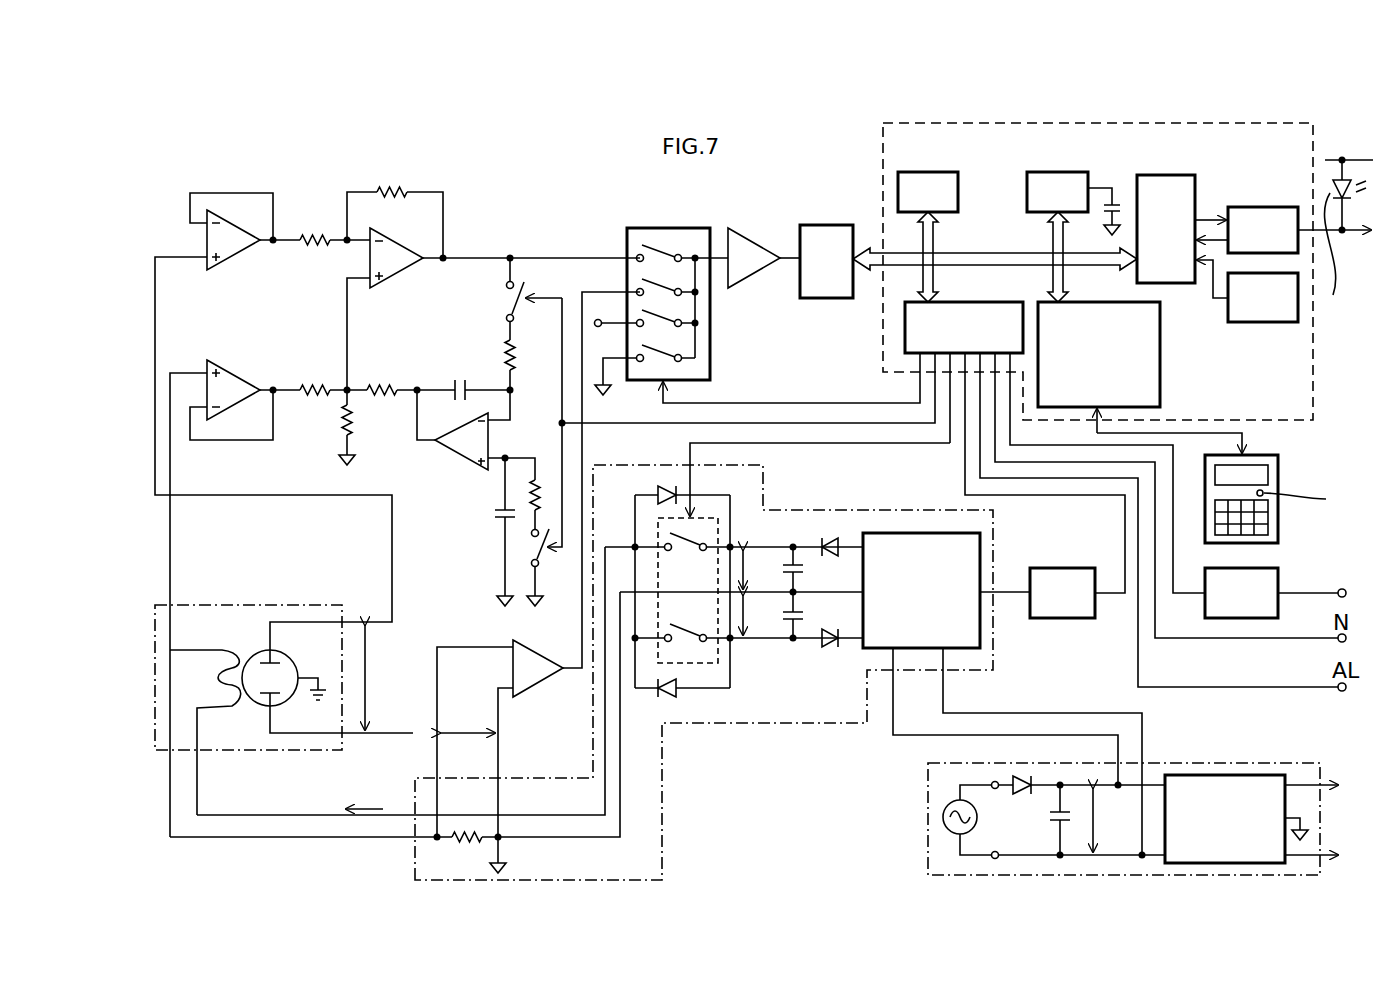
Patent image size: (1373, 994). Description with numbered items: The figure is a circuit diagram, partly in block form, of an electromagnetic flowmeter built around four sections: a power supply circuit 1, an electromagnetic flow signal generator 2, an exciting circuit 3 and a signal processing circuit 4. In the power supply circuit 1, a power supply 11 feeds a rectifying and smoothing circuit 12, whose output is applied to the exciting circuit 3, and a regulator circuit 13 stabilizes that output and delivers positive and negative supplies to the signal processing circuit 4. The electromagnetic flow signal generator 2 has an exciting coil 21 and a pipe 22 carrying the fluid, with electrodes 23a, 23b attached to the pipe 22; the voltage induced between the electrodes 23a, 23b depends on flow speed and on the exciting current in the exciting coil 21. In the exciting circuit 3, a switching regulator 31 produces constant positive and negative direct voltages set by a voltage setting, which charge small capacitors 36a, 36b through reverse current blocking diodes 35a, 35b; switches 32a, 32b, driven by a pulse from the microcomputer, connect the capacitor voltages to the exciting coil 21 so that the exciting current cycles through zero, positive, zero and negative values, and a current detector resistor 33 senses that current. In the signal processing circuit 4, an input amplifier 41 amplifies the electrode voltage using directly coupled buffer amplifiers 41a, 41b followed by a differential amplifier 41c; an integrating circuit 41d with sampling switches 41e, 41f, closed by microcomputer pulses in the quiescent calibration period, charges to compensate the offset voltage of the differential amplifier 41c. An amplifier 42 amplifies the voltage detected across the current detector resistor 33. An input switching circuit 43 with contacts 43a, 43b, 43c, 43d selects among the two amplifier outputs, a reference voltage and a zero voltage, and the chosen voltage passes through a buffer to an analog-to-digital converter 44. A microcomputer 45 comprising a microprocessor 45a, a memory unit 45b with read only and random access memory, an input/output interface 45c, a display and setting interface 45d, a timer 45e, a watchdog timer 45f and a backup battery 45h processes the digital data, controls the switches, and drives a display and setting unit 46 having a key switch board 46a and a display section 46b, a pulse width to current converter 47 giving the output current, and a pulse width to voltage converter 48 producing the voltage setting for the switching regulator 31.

The power supply circuit 1 is at (1192, 763).
The power supply 11 is at (945, 812).
The rectifying and smoothing circuit 12 is at (1050, 821).
The regulator circuit 13 is at (1253, 775).
The electromagnetic flow signal generator 2 is at (245, 607).
The exciting coil 21 is at (222, 660).
The pipe 22 is at (294, 666).
The electrode 23a is at (263, 653).
The electrode 23b is at (263, 705).
The exciting circuit 3 is at (415, 860).
The switching regulator 31 is at (912, 533).
The switch 32a is at (734, 591).
The switch 32b is at (748, 647).
The current detector resistor 33 is at (466, 843).
The reverse current blocking diode 35a is at (836, 535).
The reverse current blocking diode 35b is at (832, 652).
The capacitor 36a is at (787, 562).
The capacitor 36b is at (792, 626).
The signal processing circuit 4 is at (826, 194).
The input amplifier 41 is at (565, 168).
The directly coupled buffer amplifier 41a is at (232, 262).
The directly coupled buffer amplifier 41b is at (232, 368).
The differential amplifier 41c is at (392, 281).
The integrating circuit 41d is at (470, 458).
The sampling switch 41e is at (505, 302).
The sampling switch 41f is at (550, 568).
The amplifier 42 is at (520, 652).
The input switching circuit 43 is at (652, 228).
The switch contact of input switching circuit 43a is at (683, 266).
The switch contact of input switching circuit 43b is at (668, 300).
The switch contact of input switching circuit 43c is at (668, 331).
The switch contact of input switching circuit 43d is at (666, 364).
The A/D converter 44 is at (830, 300).
The microcomputer 45 is at (1313, 370).
The CPU 45a is at (1147, 175).
The memory unit 45b is at (1090, 165).
The input/output interface 45c is at (968, 302).
The display and setting interface 45d is at (1160, 345).
The timer 45e is at (968, 253).
The watchdog timer 45f is at (1256, 207).
The battery 45h is at (1122, 198).
The display and setting unit 46 is at (1270, 455).
The key switch board 46a is at (1266, 518).
The display section 46b is at (1268, 471).
The pulse width to current converter 47 is at (1258, 568).
The pulse width to voltage converter 48 is at (1055, 568).